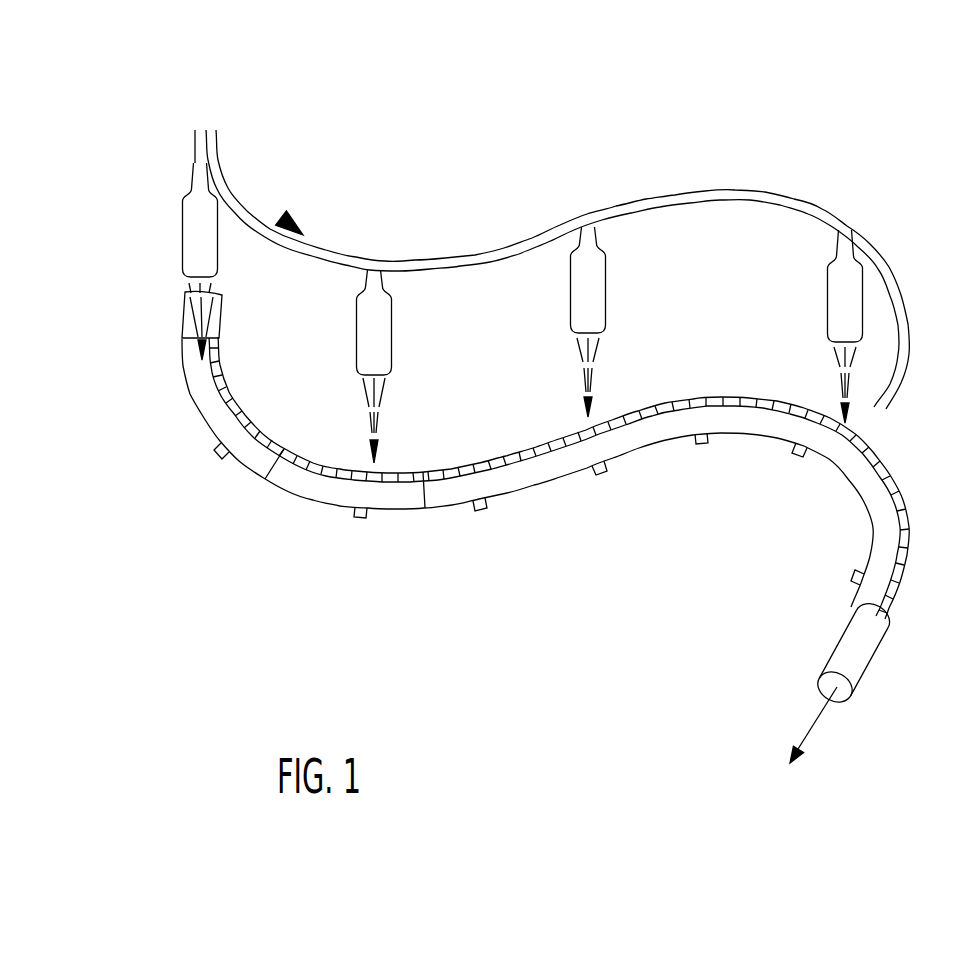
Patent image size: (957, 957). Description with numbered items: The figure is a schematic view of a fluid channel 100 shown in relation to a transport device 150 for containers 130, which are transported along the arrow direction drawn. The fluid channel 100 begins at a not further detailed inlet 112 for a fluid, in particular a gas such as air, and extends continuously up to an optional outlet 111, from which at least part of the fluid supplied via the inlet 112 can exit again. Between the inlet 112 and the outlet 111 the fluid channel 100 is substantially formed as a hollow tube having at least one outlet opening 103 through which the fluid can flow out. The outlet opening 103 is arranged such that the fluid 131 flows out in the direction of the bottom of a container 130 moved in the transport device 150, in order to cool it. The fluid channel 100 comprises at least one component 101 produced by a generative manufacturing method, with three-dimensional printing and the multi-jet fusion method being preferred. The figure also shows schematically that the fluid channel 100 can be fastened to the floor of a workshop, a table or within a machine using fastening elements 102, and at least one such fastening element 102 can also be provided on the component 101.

The fluid channel 100 is at (284, 560).
The component 101 is at (393, 504).
The fastening elements 102 is at (215, 450).
The outlet opening 103 is at (310, 452).
The outlet 111 is at (865, 665).
The inlet 112 is at (190, 333).
The containers 130 is at (593, 290).
The fluid 131 is at (387, 413).
The transport device 150 is at (813, 207).